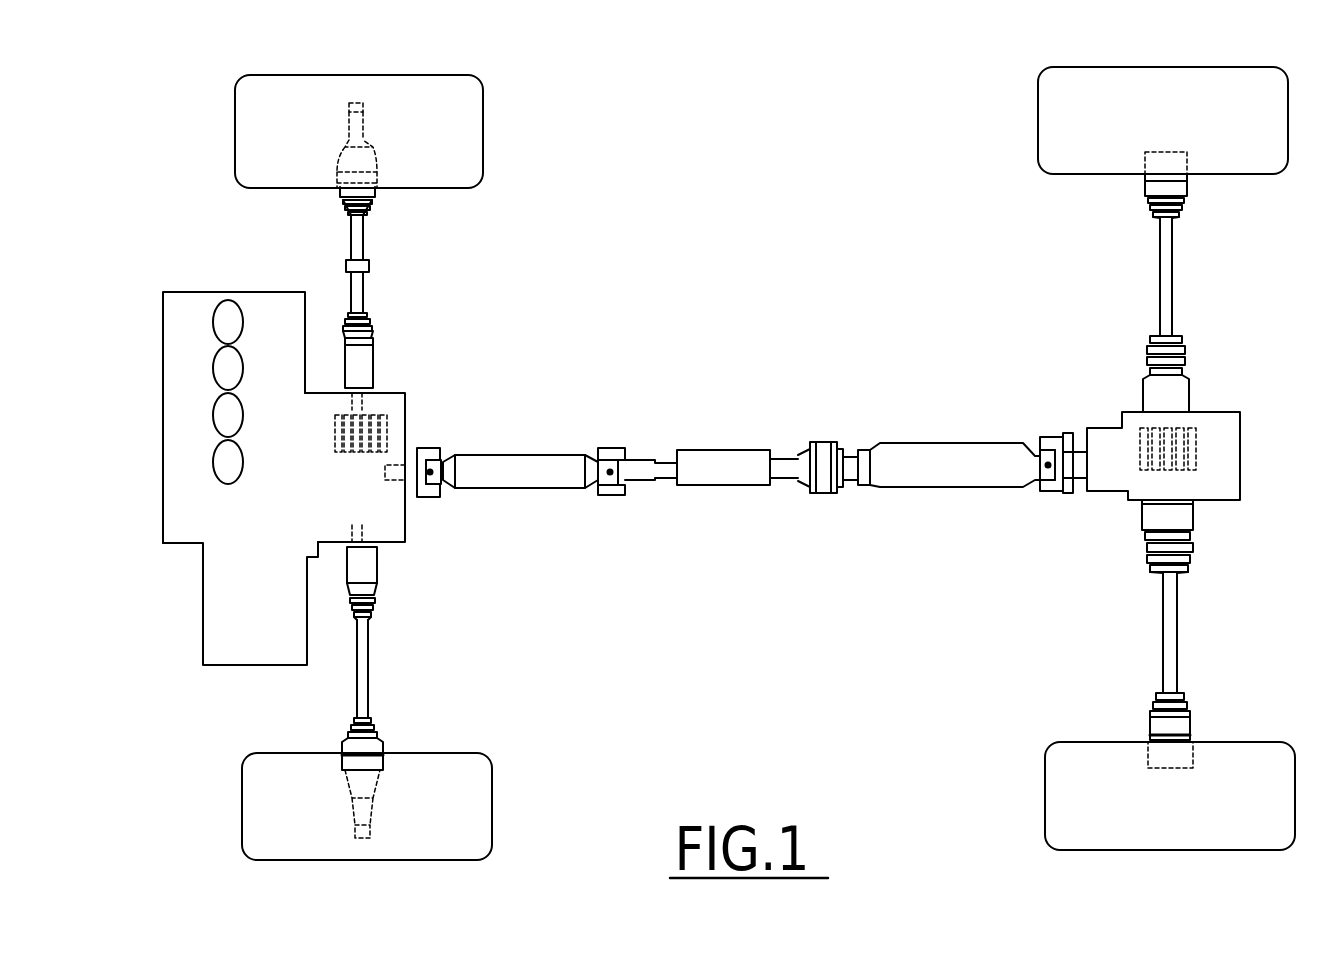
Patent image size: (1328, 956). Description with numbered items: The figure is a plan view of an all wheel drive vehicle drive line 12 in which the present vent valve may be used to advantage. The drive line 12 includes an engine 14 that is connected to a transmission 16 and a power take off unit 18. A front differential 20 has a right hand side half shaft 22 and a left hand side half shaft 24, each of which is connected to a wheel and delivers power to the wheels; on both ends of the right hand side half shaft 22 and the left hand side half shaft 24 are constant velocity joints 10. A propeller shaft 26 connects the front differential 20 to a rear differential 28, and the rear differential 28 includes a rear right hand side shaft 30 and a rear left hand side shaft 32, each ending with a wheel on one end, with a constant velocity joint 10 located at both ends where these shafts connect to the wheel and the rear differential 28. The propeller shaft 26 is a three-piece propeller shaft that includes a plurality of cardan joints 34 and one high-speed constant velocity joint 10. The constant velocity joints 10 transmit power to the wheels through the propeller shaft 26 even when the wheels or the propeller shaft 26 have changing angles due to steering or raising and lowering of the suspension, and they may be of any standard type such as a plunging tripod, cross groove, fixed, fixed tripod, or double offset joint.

The constant velocity joint 10 is at (368, 213).
The drive line 12 is at (626, 126).
The engine 14 is at (195, 395).
The transmission 16 is at (223, 643).
The power take off unit 18 is at (395, 413).
The front differential 20 is at (398, 522).
The right hand side half shaft 22 is at (362, 290).
The left hand side half shaft 24 is at (363, 668).
The propeller shaft 26 is at (722, 487).
The rear differential 28 is at (1225, 444).
The rear right hand side shaft 30 is at (1170, 270).
The rear left hand side shaft 32 is at (1175, 640).
The cardan joint 34 is at (614, 447).